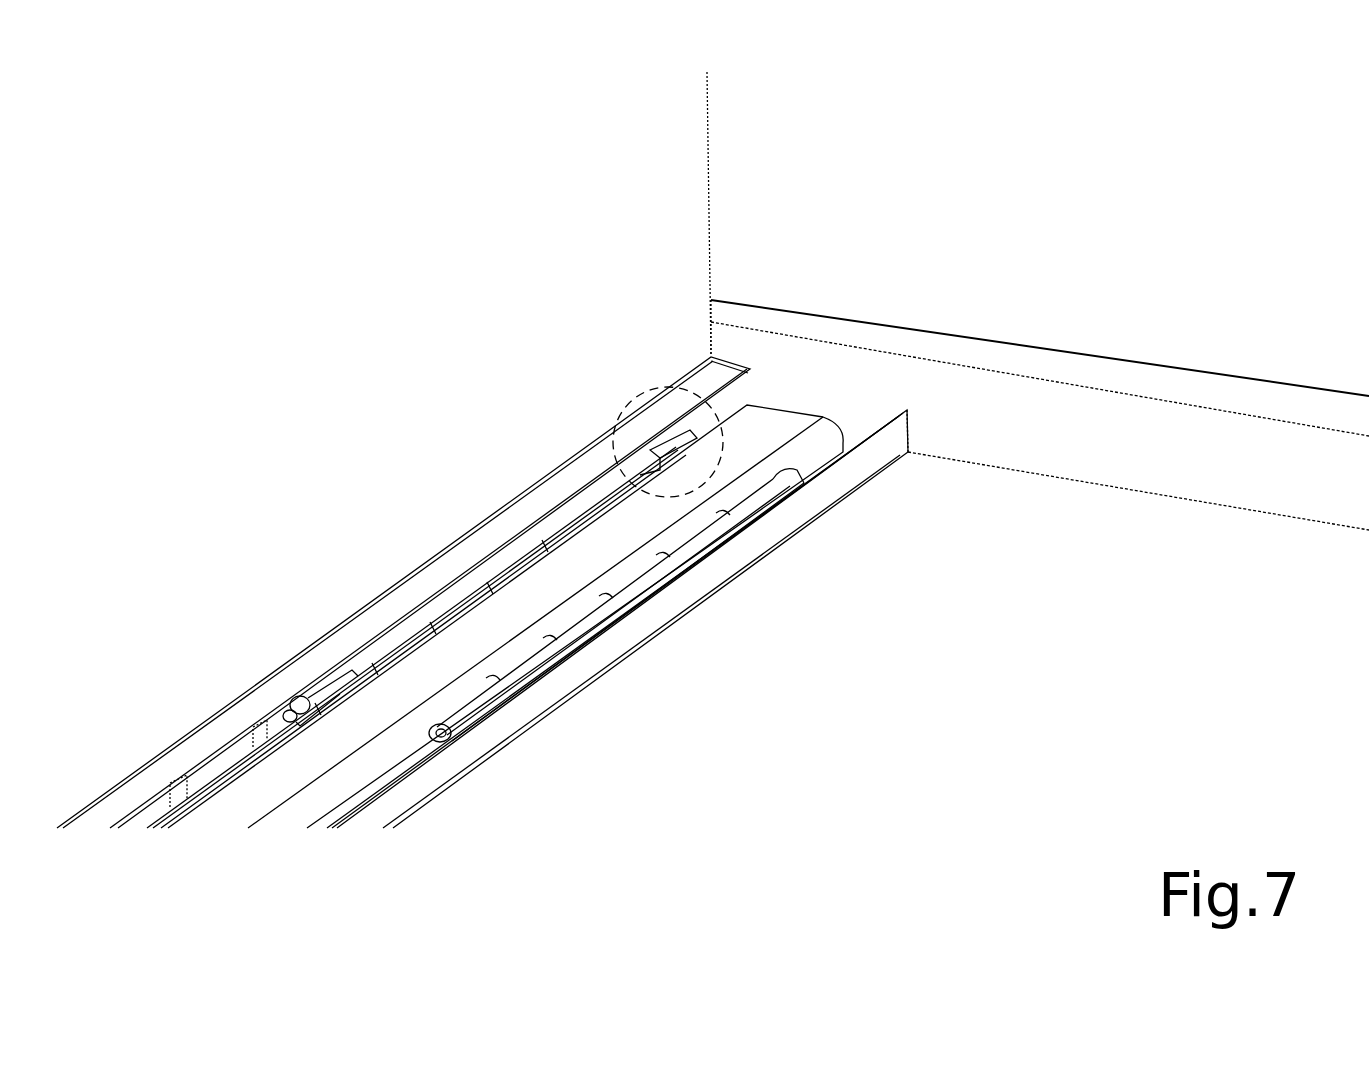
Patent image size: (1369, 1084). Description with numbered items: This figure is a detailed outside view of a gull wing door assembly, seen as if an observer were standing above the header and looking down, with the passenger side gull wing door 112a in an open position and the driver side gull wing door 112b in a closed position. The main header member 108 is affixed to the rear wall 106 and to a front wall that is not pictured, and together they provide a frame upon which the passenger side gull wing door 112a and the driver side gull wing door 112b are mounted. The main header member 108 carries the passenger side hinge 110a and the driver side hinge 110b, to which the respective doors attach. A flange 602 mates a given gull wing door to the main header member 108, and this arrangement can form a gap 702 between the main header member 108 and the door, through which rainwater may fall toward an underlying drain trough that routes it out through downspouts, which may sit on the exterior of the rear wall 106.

The rear wall 106 is at (773, 323).
The main header member 108 is at (768, 420).
The passenger side hinge 110a is at (560, 528).
The driver side hinge 110b is at (662, 567).
The passenger side gull wing door 112a is at (683, 215).
The driver side gull wing door 112b is at (962, 502).
The flange 602 is at (727, 532).
The gap 702 is at (655, 392).